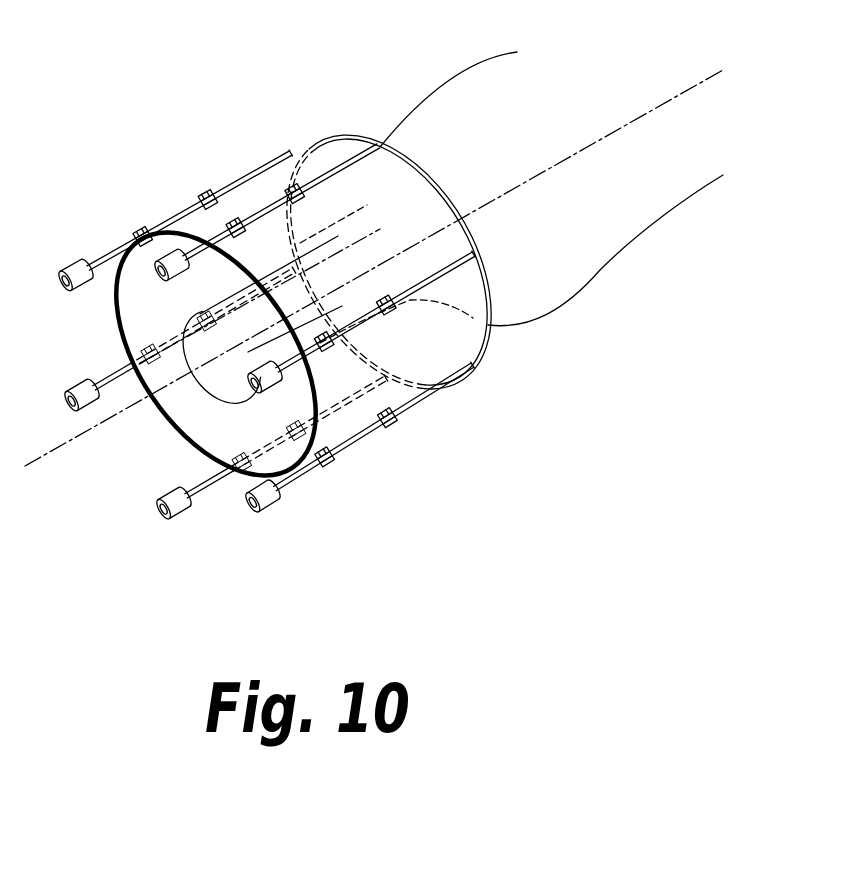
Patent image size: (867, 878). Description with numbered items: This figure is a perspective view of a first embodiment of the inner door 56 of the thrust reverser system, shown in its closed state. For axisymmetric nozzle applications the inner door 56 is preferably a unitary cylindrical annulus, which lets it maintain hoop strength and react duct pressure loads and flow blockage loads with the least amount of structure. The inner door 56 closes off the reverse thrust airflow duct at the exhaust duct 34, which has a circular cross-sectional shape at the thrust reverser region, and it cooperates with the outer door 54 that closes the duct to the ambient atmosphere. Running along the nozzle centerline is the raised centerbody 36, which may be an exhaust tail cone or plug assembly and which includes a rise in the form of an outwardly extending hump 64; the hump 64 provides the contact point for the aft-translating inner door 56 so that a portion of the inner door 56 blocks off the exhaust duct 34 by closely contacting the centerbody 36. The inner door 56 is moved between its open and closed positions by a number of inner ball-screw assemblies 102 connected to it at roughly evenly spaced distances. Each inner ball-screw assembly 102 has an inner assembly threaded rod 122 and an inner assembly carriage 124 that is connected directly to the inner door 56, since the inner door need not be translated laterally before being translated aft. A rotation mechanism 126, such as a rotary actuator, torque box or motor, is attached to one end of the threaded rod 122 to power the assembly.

The exhaust duct 34 is at (187, 428).
The centerbody 36 is at (220, 390).
The outer door 54 is at (122, 325).
The inner door 56 is at (466, 334).
The hump 64 is at (428, 118).
The inner ball-screw assembly 102 is at (249, 480).
The inner assembly threaded rod 122 is at (381, 468).
The inner assembly carriage 124 is at (393, 428).
The rotation mechanism 126 is at (162, 520).